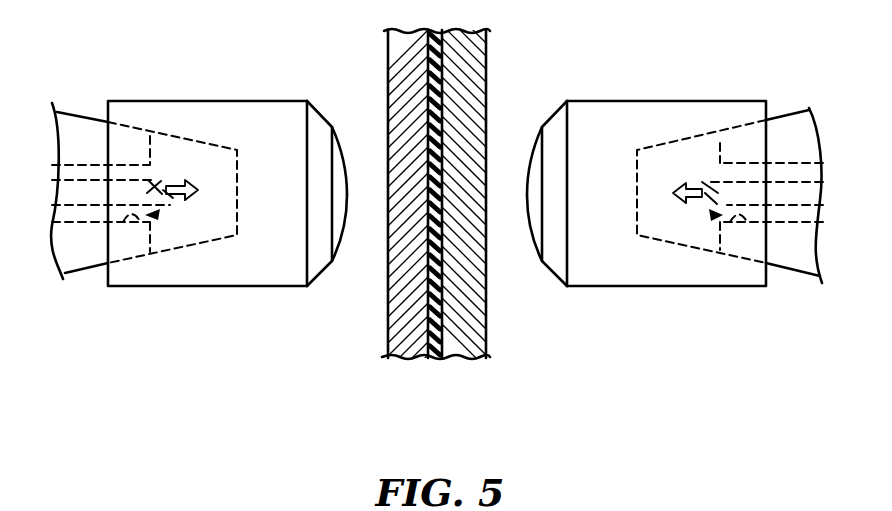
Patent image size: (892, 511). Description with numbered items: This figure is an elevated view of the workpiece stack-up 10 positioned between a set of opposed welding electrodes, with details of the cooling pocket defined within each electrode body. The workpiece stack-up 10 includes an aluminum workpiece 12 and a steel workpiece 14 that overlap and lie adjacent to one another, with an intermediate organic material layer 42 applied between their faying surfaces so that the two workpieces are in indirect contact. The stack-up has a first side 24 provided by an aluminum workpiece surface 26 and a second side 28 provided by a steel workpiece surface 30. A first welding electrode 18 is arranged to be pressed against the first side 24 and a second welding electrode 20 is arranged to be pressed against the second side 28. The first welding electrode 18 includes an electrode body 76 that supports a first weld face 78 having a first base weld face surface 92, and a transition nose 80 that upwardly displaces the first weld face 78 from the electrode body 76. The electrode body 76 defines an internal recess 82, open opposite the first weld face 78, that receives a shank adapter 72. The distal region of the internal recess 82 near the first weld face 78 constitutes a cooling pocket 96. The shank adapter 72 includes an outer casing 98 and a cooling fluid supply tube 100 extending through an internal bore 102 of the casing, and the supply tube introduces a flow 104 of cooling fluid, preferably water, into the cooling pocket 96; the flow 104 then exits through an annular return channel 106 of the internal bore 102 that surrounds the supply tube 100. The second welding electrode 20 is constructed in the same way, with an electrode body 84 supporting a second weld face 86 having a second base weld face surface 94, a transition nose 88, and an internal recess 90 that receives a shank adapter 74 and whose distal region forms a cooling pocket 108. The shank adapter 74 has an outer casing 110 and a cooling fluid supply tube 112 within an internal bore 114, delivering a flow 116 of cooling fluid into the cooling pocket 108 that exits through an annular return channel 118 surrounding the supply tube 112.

The workpiece stack-up 10 is at (376, 349).
The aluminum workpiece 12 is at (413, 345).
The steel workpiece 14 is at (462, 347).
The intermediate organic material layer 42 is at (437, 349).
The first welding electrode 18 is at (170, 293).
The second welding electrode 20 is at (697, 294).
The first side 24 is at (388, 125).
The aluminum workpiece surface 26 is at (388, 75).
The second side 28 is at (488, 118).
The steel workpiece surface 30 is at (488, 75).
The shank adapter 72 is at (87, 148).
The shank adapter 74 is at (782, 148).
The electrode body 76 is at (263, 270).
The first weld face 78 is at (347, 197).
The transition nose 80 is at (322, 275).
The internal recess 82 is at (188, 140).
The electrode body 84 is at (613, 268).
The second weld face 86 is at (527, 197).
The transition nose 88 is at (558, 265).
The internal recess 90 is at (676, 146).
The first base weld face surface 92 is at (348, 210).
The second base weld face surface 94 is at (526, 210).
The cooling pocket 96 is at (197, 181).
The outer casing 98 is at (122, 147).
The cooling fluid supply tube 100 is at (158, 187).
The internal bore 102 is at (160, 216).
The flow of cooling fluid 104 is at (200, 208).
The annular return channel 106 is at (121, 224).
The cooling pocket 108 is at (671, 179).
The outer casing 110 is at (734, 148).
The cooling fluid supply tube 112 is at (710, 188).
The internal bore 114 is at (708, 217).
The flow of cooling fluid 116 is at (683, 194).
The annular return channel 118 is at (745, 224).